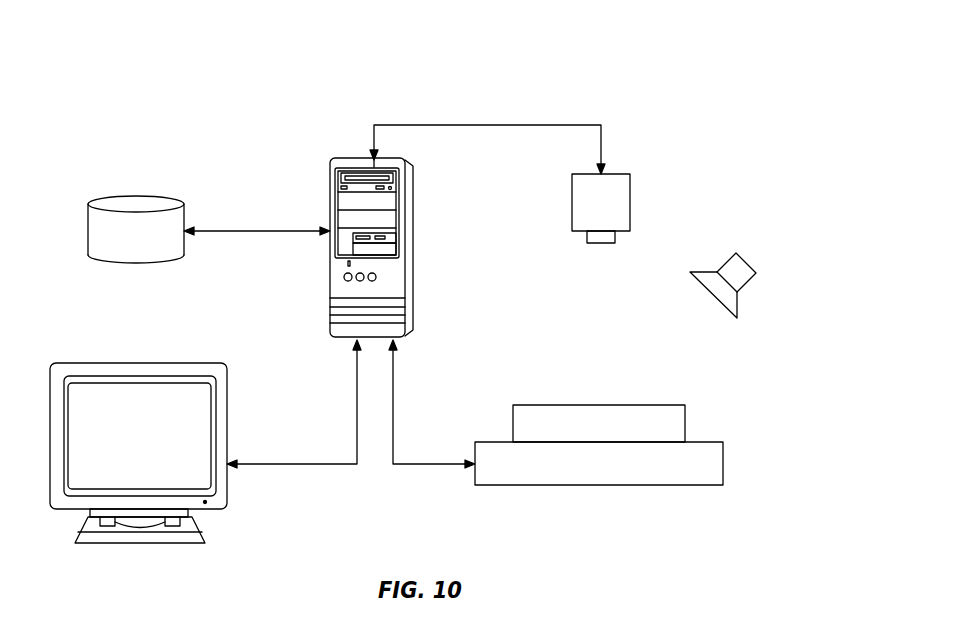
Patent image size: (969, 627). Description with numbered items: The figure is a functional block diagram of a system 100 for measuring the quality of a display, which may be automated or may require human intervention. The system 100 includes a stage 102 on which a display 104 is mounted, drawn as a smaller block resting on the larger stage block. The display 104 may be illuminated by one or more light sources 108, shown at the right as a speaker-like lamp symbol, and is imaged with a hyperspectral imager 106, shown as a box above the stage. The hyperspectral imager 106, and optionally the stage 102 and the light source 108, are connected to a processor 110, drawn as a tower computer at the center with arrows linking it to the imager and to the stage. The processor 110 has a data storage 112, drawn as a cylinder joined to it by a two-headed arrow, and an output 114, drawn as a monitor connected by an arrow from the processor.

The system 100 is at (145, 77).
The stage 102 is at (715, 442).
The display 104 is at (653, 405).
The hyperspectral imager 106 is at (620, 174).
The light source 108 is at (748, 261).
The processor 110 is at (350, 159).
The data storage 112 is at (105, 202).
The output 114 is at (73, 363).